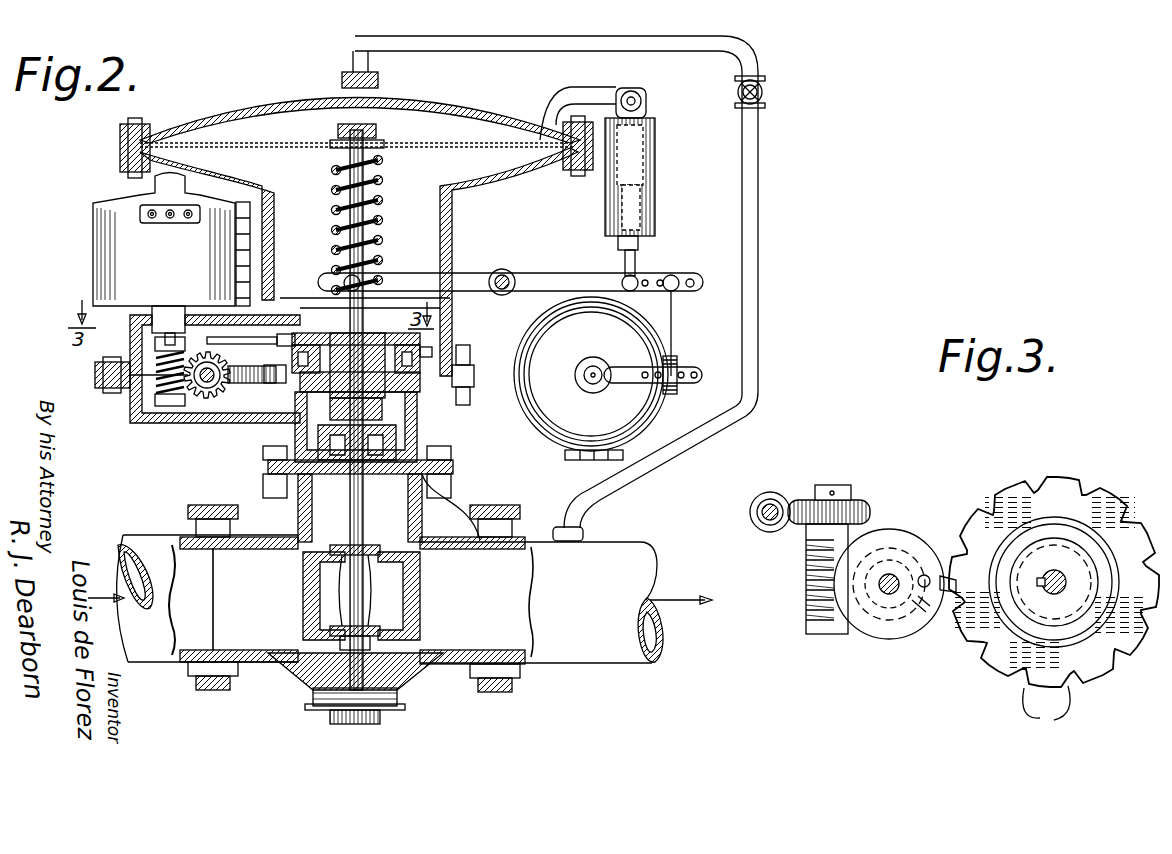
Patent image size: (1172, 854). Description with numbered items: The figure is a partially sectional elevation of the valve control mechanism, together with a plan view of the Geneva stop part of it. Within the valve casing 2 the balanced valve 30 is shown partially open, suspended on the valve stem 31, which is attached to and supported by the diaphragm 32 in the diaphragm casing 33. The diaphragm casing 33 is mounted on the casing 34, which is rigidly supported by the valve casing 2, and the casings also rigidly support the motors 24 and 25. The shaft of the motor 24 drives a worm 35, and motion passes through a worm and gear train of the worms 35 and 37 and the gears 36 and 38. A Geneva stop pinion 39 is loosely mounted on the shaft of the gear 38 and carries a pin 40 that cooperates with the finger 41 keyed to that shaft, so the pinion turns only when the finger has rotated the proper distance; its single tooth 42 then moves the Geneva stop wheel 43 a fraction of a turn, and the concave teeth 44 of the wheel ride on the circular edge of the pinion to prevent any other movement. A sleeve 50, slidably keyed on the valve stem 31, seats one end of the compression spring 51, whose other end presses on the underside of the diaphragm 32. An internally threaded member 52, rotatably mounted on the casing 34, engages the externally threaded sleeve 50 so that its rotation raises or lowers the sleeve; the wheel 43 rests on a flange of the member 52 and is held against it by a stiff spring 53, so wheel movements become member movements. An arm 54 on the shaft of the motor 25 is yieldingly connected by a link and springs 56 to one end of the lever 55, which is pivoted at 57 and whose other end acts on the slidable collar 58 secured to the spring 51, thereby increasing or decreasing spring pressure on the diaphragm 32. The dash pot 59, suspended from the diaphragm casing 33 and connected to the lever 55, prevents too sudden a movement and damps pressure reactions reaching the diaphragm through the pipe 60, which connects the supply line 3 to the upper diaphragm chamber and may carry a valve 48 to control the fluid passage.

In FIG. 2, the valve casing 2 is at (282, 675).
In FIG. 2, the supply line 3 is at (586, 656).
In FIG. 2, the motor 24 is at (106, 266).
In FIG. 2, the motor 25 is at (658, 426).
In FIG. 2, the balanced valve 30 is at (372, 546).
In FIG. 2, the valve stem 31 is at (351, 500).
In FIG. 2, the diaphragm 32 is at (420, 144).
In FIG. 2, the diaphragm casing 33 is at (458, 102).
In FIG. 2, the casing 34 is at (296, 432).
In FIG. 2, the worm 35 is at (132, 400).
In FIG. 3, the worm 35 is at (764, 494).
In FIG. 2, the gear 36 is at (192, 398).
In FIG. 3, the gear 36 is at (865, 500).
In FIG. 2, the worm 37 is at (210, 398).
In FIG. 3, the worm 37 is at (806, 570).
In FIG. 2, the gear 38 is at (242, 385).
In FIG. 3, the Geneva stop pinion 39 is at (897, 530).
In FIG. 3, the pin 40 is at (926, 574).
In FIG. 3, the finger 41 is at (918, 614).
In FIG. 3, the tooth 42 is at (948, 598).
In FIG. 2, the Geneva stop wheel 43 is at (298, 338).
In FIG. 3, the Geneva stop wheel 43 is at (1030, 494).
In FIG. 3, the teeth 44 is at (1048, 706).
In FIG. 2, the valve 48 is at (764, 92).
In FIG. 2, the sleeve 50 is at (388, 336).
In FIG. 2, the compression spring 51 is at (386, 240).
In FIG. 2, the member 52 is at (325, 334).
In FIG. 2, the spring 53 is at (278, 384).
In FIG. 2, the arm 54 is at (694, 369).
In FIG. 2, the lever 55 is at (692, 276).
In FIG. 2, the link and springs 56 is at (674, 326).
In FIG. 2, the pivot 57 is at (506, 275).
In FIG. 2, the slidable collar 58 is at (344, 280).
In FIG. 2, the dash pot 59 is at (656, 153).
In FIG. 2, the pipe 60 is at (758, 216).